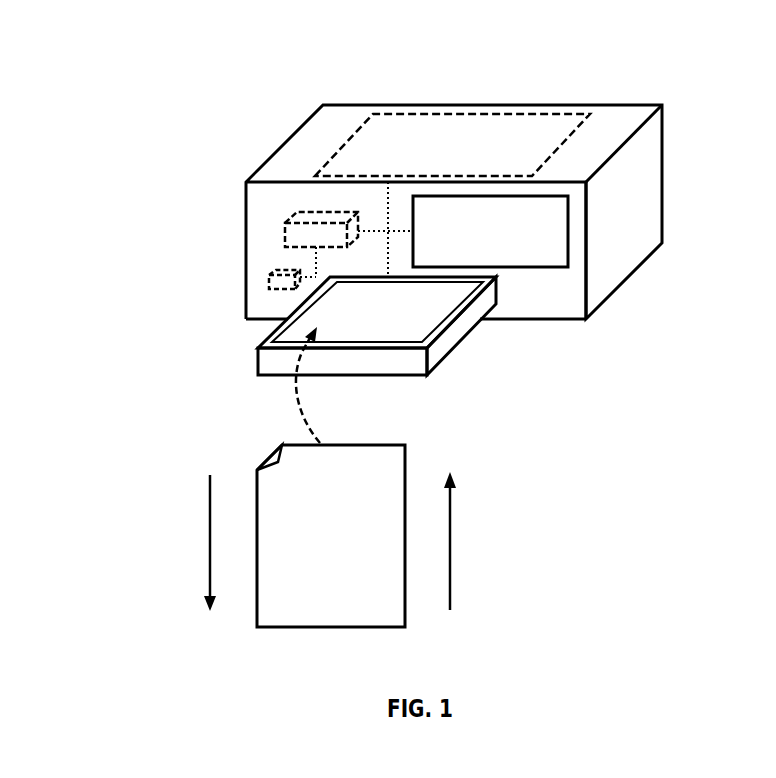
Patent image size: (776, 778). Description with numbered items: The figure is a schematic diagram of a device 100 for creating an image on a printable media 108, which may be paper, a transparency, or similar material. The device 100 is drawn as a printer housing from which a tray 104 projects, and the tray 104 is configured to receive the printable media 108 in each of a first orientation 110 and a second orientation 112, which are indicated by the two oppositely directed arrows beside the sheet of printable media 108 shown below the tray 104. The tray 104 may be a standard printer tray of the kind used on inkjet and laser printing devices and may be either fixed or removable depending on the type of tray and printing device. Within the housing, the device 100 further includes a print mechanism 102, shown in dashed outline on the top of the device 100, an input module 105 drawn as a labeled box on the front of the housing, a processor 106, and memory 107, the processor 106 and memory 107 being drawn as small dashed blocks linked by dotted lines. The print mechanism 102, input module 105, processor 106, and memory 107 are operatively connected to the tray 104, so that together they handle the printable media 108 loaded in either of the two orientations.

The device 100 is at (692, 104).
The print mechanism 102 is at (545, 113).
The tray 104 is at (258, 361).
The input module 105 is at (472, 258).
The processor 106 is at (285, 231).
The memory 107 is at (269, 282).
The printable media 108 is at (313, 580).
The first orientation 110 is at (450, 563).
The second orientation 112 is at (208, 572).